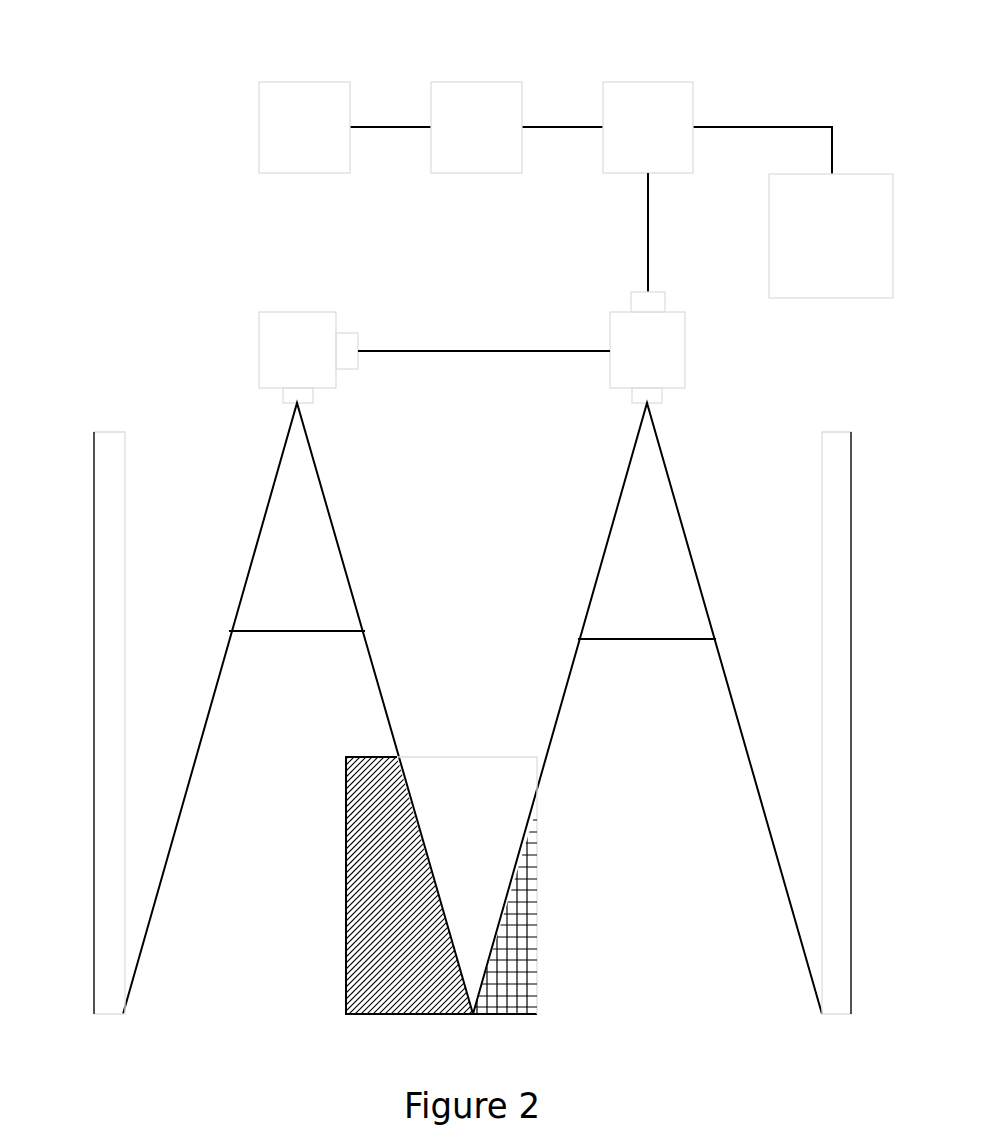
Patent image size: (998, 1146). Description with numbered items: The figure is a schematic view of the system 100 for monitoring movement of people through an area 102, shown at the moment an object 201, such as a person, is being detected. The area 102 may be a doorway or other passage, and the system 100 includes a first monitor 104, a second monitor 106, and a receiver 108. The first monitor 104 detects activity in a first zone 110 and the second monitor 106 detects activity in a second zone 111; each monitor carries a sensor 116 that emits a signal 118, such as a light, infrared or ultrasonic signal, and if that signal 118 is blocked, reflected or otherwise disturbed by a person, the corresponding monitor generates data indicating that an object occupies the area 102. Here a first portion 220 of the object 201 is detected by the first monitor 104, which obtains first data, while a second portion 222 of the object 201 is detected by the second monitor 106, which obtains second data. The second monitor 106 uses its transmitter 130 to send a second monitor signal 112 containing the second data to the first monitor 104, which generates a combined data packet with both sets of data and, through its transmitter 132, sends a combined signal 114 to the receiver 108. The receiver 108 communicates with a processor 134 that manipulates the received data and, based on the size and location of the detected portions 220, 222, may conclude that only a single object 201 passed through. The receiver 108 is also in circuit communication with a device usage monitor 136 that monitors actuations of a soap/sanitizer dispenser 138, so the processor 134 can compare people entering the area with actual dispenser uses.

The system 100 is at (148, 123).
The area 102 is at (84, 600).
The first monitor 104 is at (685, 345).
The second monitor 106 is at (259, 345).
The receiver 108 is at (656, 82).
The first zone 110 is at (647, 624).
The second zone 111 is at (297, 616).
The second monitor signal 112 is at (445, 351).
The combined signal 114 is at (648, 240).
The sensor 116 is at (283, 396).
The signal 118 is at (472, 708).
The transmitter 130 is at (358, 330).
The transmitter 132 is at (631, 297).
The processor 134 is at (847, 298).
The device usage monitor 136 is at (484, 82).
The soap/sanitizer dispenser 138 is at (313, 82).
The object 201 is at (372, 1058).
The first portion 220 is at (537, 913).
The second portion 222 is at (346, 886).